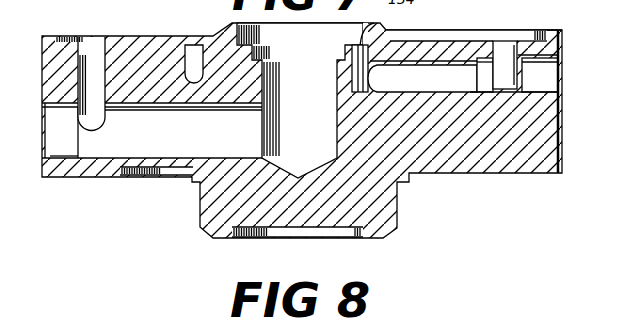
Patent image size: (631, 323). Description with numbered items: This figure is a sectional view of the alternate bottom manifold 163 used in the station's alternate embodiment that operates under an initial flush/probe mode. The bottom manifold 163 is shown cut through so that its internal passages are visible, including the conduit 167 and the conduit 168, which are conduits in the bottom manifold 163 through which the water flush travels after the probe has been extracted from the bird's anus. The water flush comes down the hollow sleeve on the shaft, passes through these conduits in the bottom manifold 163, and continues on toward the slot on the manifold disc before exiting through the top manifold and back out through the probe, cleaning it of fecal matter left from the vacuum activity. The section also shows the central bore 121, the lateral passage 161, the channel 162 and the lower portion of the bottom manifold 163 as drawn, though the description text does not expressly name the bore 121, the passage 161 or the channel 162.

The bore 121 is at (315, 103).
The passage 161 is at (190, 141).
The channel 162 is at (100, 58).
The alternate bottom manifold 163 is at (208, 231).
The conduit 167 is at (436, 72).
The conduit 168 is at (505, 48).